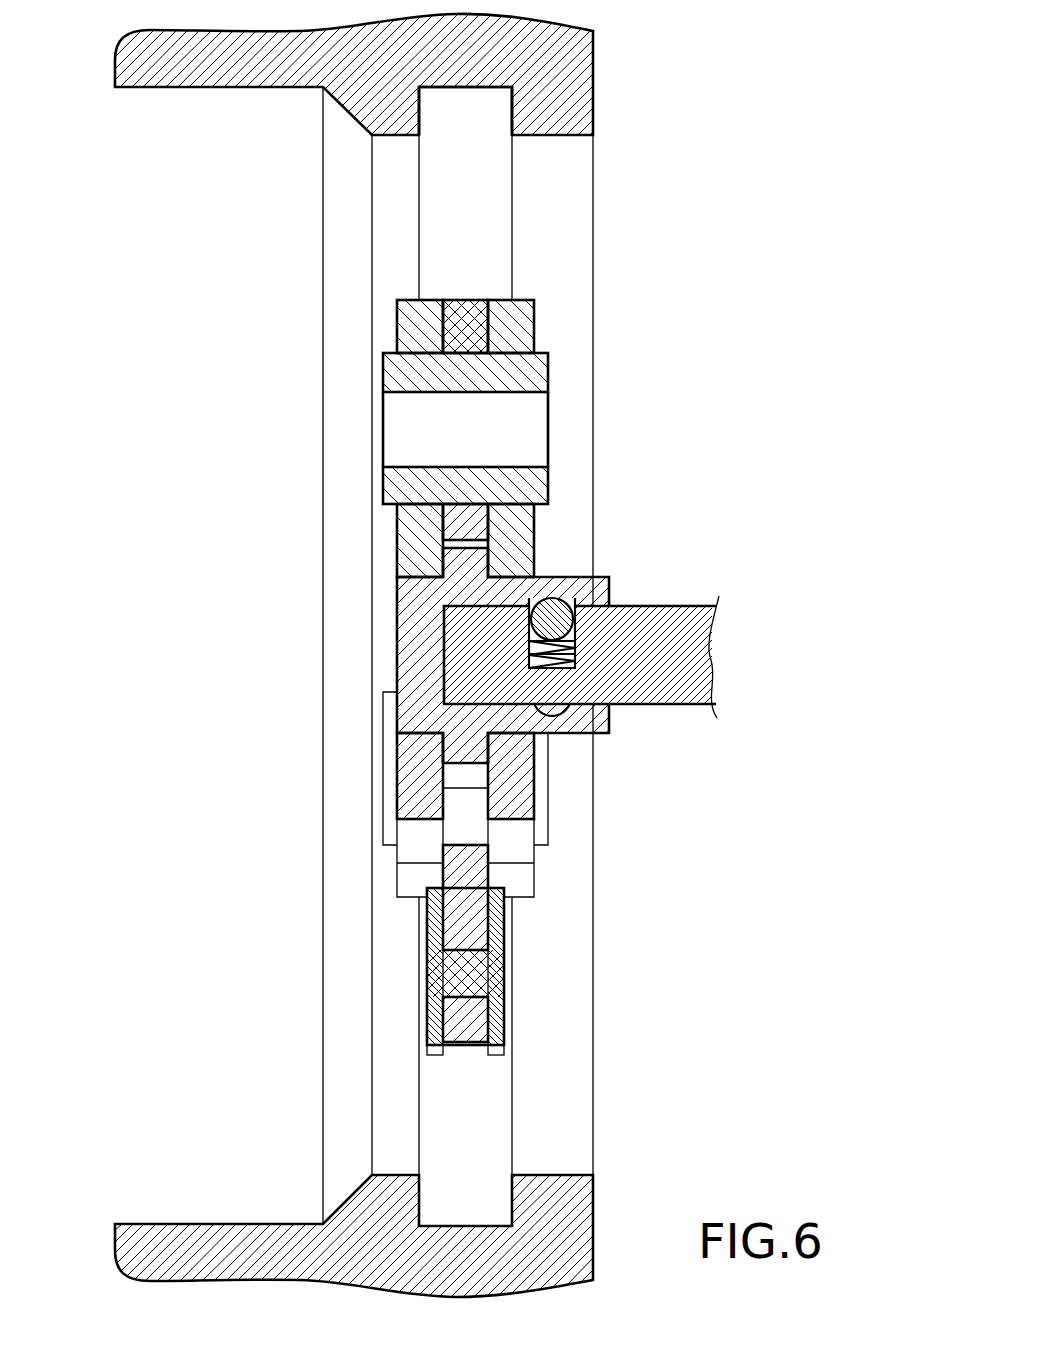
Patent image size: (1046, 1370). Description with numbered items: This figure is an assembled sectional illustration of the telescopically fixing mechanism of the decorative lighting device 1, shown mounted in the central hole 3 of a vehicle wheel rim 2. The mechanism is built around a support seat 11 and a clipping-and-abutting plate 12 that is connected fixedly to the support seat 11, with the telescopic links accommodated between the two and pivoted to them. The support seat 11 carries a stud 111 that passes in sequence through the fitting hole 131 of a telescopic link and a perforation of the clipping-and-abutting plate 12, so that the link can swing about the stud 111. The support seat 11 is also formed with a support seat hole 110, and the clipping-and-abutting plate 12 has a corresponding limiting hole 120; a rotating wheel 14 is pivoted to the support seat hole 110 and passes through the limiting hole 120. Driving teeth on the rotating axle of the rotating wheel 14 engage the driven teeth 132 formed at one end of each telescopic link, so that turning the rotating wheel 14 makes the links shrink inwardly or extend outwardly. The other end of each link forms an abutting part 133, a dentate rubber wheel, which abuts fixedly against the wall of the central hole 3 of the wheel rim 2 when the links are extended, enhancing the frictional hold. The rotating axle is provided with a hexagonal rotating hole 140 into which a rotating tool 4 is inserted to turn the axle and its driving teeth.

The decorative lighting device 1 is at (569, 490).
The wheel rim 2 is at (575, 85).
The central hole 3 is at (558, 135).
The rotating tool 4 is at (680, 692).
The support seat 11 is at (415, 323).
The clipping-and-abutting plate 12 is at (527, 540).
The rotating wheel 14 is at (613, 593).
The support seat hole 110 is at (417, 730).
The stud 111 is at (543, 378).
The limiting hole 120 is at (533, 765).
The fitting hole 131 is at (465, 355).
The driven teeth 132 is at (467, 325).
The abutting part 133 is at (497, 930).
The rotating hole 140 is at (610, 705).